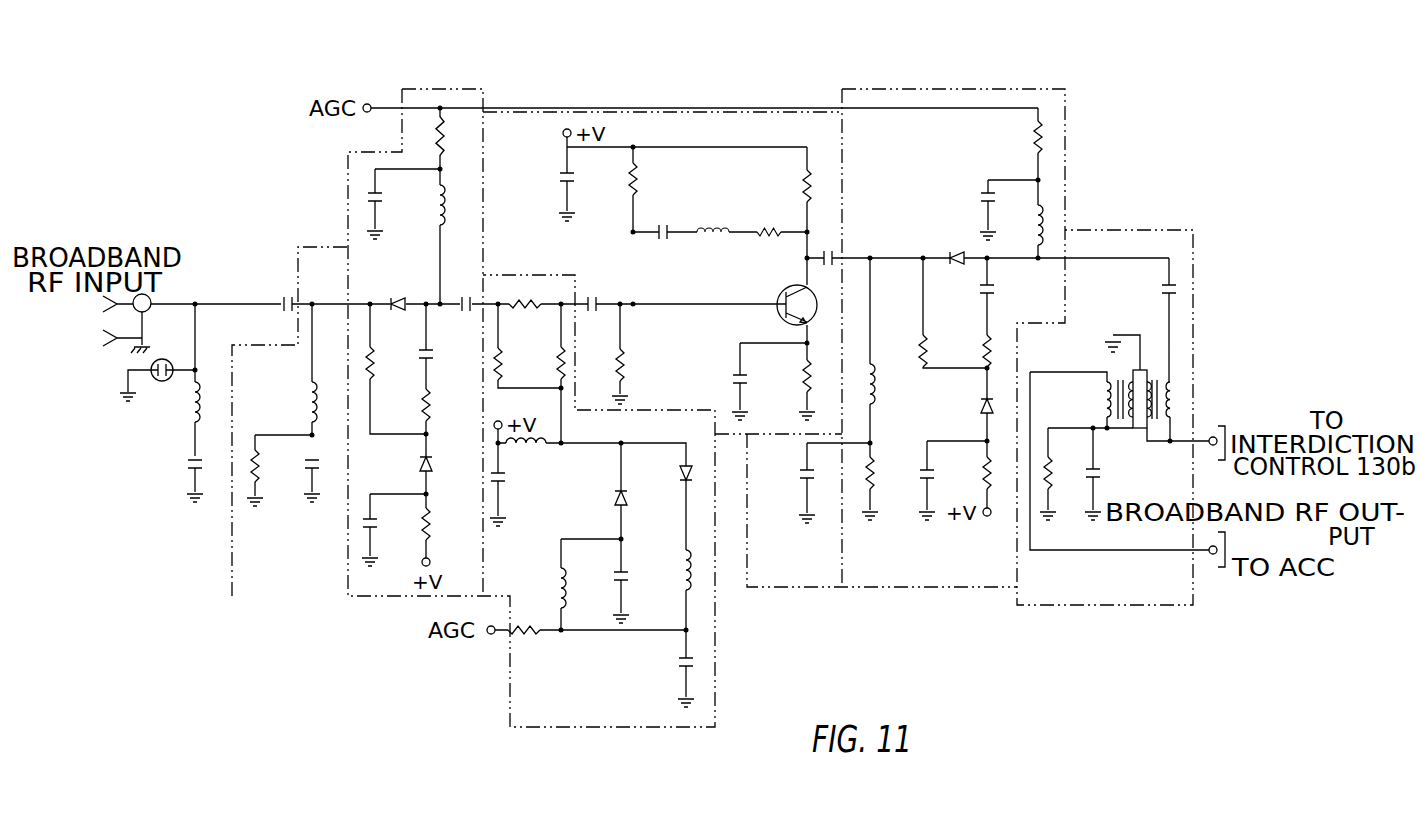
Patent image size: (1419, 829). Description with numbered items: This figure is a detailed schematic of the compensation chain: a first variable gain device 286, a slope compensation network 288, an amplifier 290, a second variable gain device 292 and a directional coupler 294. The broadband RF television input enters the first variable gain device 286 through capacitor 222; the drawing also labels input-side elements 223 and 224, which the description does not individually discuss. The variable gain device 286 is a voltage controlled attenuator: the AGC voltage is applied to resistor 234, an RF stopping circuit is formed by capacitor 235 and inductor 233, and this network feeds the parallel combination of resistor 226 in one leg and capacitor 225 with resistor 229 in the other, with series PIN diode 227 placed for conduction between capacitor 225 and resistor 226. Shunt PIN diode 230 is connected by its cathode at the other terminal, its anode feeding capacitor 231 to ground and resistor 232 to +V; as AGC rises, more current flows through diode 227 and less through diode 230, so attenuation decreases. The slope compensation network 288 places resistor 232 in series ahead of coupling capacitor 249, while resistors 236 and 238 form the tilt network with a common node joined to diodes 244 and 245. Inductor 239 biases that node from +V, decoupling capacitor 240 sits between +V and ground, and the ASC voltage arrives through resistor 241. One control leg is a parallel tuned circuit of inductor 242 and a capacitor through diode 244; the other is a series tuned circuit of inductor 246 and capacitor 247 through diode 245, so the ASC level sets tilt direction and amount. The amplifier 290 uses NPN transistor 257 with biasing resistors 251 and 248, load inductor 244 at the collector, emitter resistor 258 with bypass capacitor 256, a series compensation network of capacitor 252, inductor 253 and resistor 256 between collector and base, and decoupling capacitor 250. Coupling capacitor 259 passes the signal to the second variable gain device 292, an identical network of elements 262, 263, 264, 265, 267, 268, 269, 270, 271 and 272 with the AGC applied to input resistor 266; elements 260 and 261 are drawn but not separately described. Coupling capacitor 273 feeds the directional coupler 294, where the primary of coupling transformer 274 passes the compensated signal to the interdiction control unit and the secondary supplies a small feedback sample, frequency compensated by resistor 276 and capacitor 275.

The capacitor 222 is at (282, 298).
The inductor 223 is at (308, 404).
The resistor 224 is at (250, 470).
The capacitor 225 is at (310, 468).
The resistor 226 is at (410, 372).
The diode 227 is at (418, 270).
The resistor 229 is at (428, 406).
The diode 230 is at (420, 468).
The capacitor 231 is at (360, 530).
The resistor 232 is at (432, 530).
The inductor 233 is at (445, 218).
The resistor 234 is at (447, 140).
The capacitor 235 is at (365, 196).
The resistor 236 is at (503, 350).
The resistor 238 is at (557, 352).
The inductor 239 is at (540, 446).
The decoupling capacitor 240 is at (505, 475).
The resistor 241 is at (515, 634).
The inductor 242 is at (557, 583).
The diode 244 is at (810, 187).
The diode 245 is at (680, 473).
The inductor 246 is at (680, 573).
The capacitor 247 is at (677, 661).
The biasing resistor 248 is at (625, 360).
The coupling capacitor 249 is at (605, 300).
The high frequency decoupling capacitor 250 is at (563, 174).
The biasing resistor 251 is at (637, 187).
The capacitor 252 is at (672, 236).
The inductor 253 is at (724, 212).
The bypass capacitor 256 is at (764, 227).
The NPN transistor 257 is at (790, 292).
The emitter biasing resistor 258 is at (802, 385).
The coupling capacitor 259 is at (844, 256).
The inductor 260 is at (873, 374).
The capacitor 261 is at (802, 472).
The variable gain network element 262 is at (868, 487).
The variable gain network element 263 is at (920, 340).
The variable gain network element 264 is at (956, 253).
The variable gain network element 265 is at (984, 194).
The input resistor 266 is at (1043, 144).
The variable gain network element 267 is at (1043, 232).
The variable gain network element 268 is at (991, 286).
The variable gain network element 269 is at (984, 340).
The variable gain network element 270 is at (978, 404).
The variable gain network element 271 is at (922, 478).
The variable gain network element 272 is at (993, 483).
The coupling capacitor 273 is at (1176, 286).
The coupling transformer 274 is at (1170, 395).
The capacitor 275 is at (1102, 470).
The resistor 276 is at (1057, 478).
The variable gain device 286 is at (435, 89).
The slope compensation network 288 is at (718, 670).
The amplifier 290 is at (710, 110).
The variable gain device 292 is at (940, 89).
The directional coupler 294 is at (1143, 230).